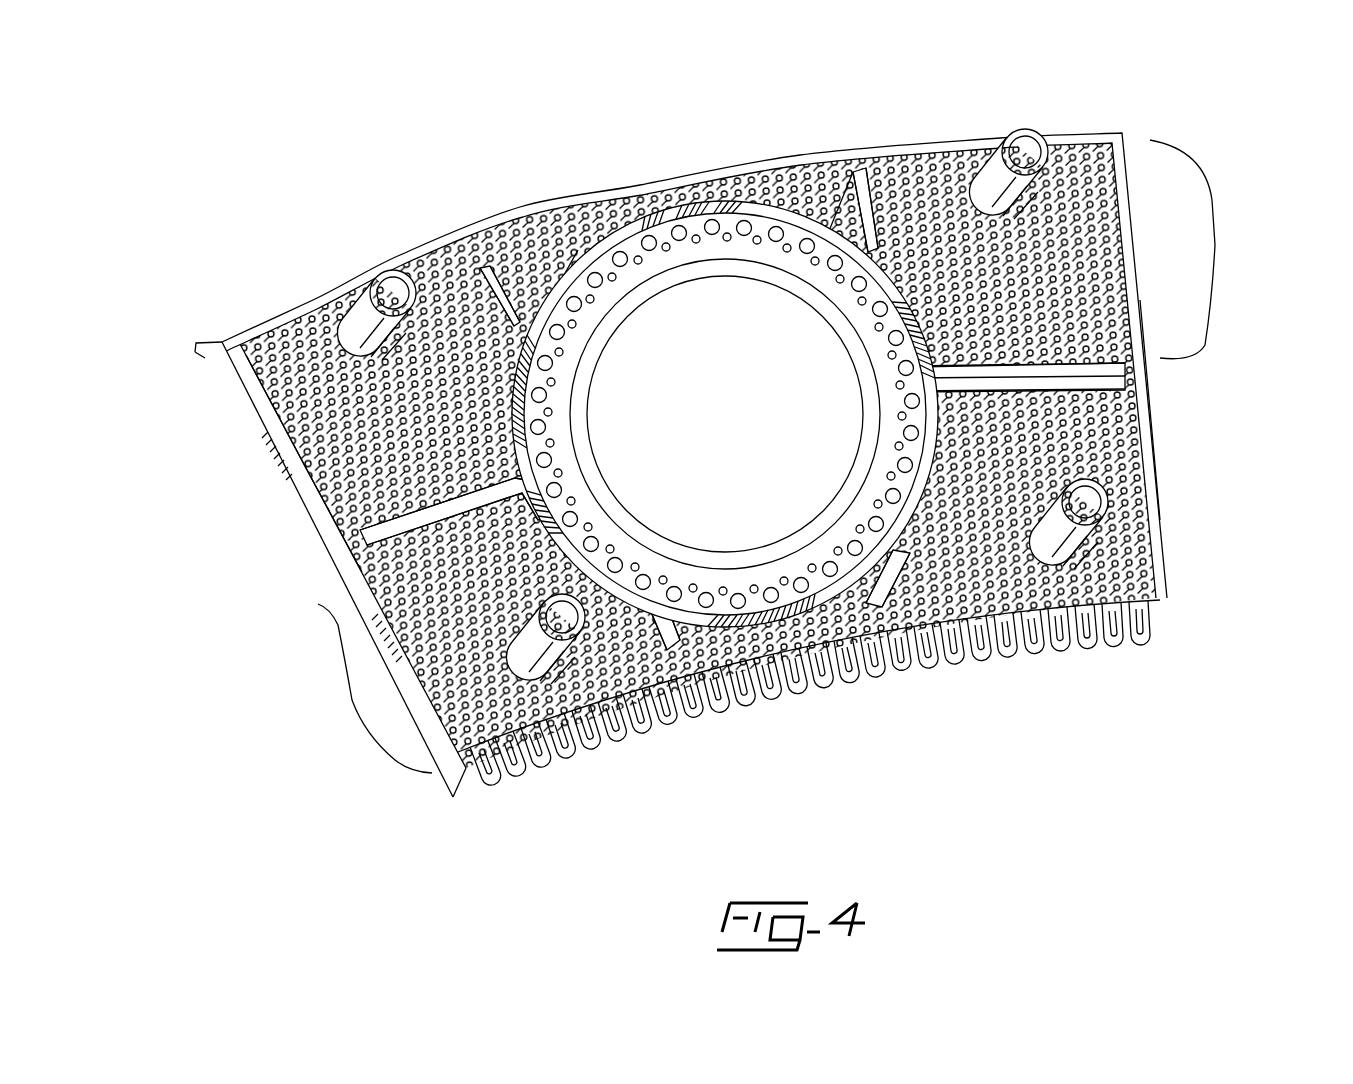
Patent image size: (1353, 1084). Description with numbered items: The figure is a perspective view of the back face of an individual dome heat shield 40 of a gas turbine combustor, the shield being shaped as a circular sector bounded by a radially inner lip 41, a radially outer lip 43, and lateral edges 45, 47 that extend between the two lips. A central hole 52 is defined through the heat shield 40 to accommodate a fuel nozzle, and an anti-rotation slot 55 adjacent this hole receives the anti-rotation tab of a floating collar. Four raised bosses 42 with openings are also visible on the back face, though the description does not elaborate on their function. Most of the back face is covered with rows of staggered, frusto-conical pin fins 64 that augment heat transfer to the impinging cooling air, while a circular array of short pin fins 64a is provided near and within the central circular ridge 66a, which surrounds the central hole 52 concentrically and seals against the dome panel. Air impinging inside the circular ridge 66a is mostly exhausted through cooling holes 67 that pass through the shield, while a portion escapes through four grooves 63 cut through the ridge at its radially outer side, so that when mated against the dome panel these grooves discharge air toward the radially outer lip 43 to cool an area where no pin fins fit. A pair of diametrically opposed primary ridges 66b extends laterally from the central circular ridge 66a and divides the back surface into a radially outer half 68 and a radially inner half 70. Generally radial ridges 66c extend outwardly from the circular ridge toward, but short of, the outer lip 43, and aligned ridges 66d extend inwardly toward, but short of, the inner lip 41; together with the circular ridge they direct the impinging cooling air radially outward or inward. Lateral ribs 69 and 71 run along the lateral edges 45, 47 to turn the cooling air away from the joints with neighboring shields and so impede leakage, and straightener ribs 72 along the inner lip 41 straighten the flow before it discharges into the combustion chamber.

The dome heat shield 40 is at (240, 540).
The radially inner lip 41 is at (458, 800).
The mounting boss 42 is at (377, 323).
The radially outer lip 43 is at (207, 345).
The lateral edge 45 is at (363, 532).
The lateral edge 47 is at (1175, 385).
The central hole 52 is at (803, 463).
The anti-rotation slot 55 is at (563, 535).
The grooves 63 is at (690, 205).
The pin fins 64 is at (347, 390).
The short pin fins 64a is at (828, 287).
The central circular ridge 66a is at (853, 265).
The primary ridges 66b is at (365, 542).
The radially outward ridges 66c is at (523, 277).
The radially inward ridges 66d is at (647, 647).
The cooling holes 67 is at (673, 242).
The radially outer half 68 is at (1215, 245).
The lateral rib 69 is at (258, 390).
The radially inner half 70 is at (352, 700).
The lateral rib 71 is at (1160, 607).
The straightener ribs 72 is at (840, 672).